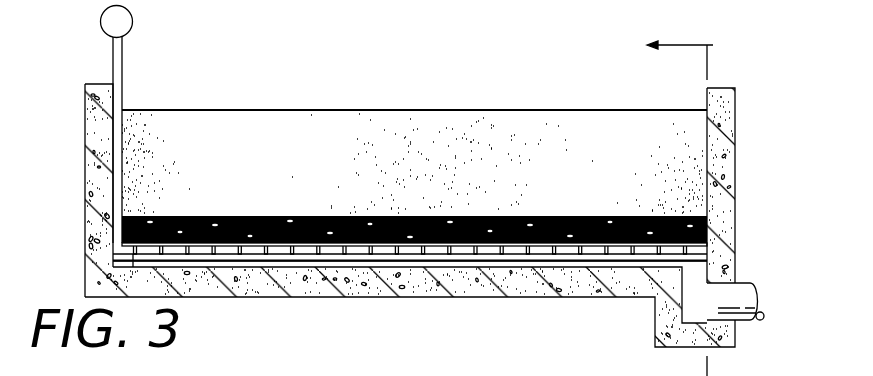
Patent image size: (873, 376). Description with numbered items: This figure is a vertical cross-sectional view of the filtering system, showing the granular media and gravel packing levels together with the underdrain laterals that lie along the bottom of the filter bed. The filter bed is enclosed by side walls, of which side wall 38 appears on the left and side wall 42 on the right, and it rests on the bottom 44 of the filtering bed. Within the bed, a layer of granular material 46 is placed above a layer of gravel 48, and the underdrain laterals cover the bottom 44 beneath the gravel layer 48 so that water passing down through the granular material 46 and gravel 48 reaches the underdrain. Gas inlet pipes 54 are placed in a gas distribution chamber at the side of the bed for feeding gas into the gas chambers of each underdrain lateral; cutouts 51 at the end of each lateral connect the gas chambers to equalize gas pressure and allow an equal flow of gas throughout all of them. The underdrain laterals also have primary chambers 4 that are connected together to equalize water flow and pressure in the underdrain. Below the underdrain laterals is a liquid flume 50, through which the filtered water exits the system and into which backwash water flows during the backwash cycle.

The side wall 38 is at (90, 170).
The side wall 42 is at (727, 148).
The bottom 44 is at (317, 290).
The layer of granular material 46 is at (522, 141).
The layer of gravel 48 is at (470, 217).
The liquid flume 50 is at (742, 292).
The cutouts 51 is at (118, 241).
The gas inlet pipes 54 is at (120, 57).
The primary chambers 4 is at (667, 203).